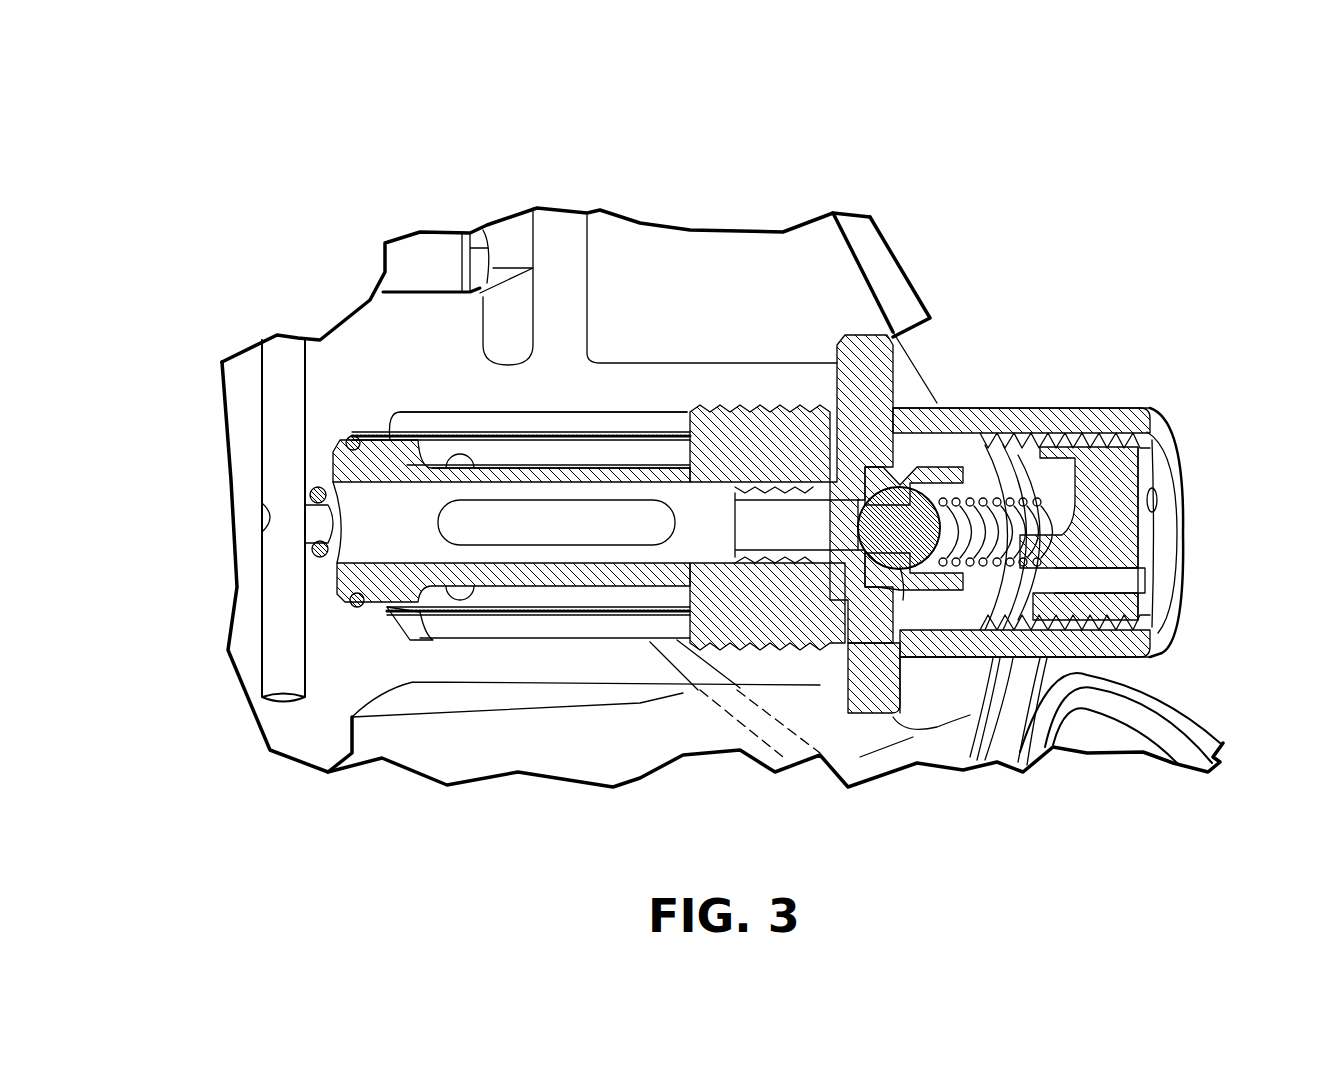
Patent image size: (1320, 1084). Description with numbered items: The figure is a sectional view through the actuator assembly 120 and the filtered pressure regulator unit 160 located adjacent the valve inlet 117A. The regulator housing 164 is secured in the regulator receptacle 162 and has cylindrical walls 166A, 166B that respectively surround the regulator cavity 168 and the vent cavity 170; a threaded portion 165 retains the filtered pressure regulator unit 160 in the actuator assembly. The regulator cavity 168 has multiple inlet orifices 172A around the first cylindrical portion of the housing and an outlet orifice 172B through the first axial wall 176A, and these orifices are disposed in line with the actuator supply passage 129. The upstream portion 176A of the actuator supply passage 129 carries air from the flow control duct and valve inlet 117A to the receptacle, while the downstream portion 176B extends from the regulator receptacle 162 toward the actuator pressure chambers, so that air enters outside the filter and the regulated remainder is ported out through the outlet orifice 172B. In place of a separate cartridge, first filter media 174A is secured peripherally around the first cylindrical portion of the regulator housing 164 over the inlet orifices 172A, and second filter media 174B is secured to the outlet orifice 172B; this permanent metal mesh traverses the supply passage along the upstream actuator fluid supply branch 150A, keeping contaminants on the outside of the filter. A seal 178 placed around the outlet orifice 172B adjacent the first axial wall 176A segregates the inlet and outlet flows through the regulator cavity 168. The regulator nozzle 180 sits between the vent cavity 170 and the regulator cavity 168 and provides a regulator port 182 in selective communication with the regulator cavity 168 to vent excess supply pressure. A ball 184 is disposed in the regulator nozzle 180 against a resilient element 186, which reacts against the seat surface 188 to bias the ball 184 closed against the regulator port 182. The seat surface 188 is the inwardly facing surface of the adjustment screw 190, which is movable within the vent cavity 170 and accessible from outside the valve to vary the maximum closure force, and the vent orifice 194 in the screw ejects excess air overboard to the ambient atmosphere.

The actuator assembly 120 is at (715, 205).
The filtered pressure regulator unit 160 is at (1125, 375).
The actuator supply passage 129 is at (305, 410).
The first filter media 174A is at (445, 430).
The outlet orifice 172B is at (515, 455).
The regulator receptacle 162 is at (605, 412).
The threaded portion 165 is at (745, 440).
The regulator nozzle 180 is at (835, 525).
The regulator port 182 is at (905, 462).
The regulator housing 164 is at (1020, 405).
The seat surface 188 is at (1068, 533).
The downstream portion 176B is at (1182, 437).
The vent orifice 194 is at (1157, 500).
The adjustment screw 190 is at (1150, 540).
The cylindrical wall 166B is at (1077, 643).
The valve inlet 117A is at (1090, 720).
The first axial wall 176A is at (332, 468).
The second filter media 174B is at (328, 522).
The seal 178 is at (330, 548).
The upstream actuator fluid supply branch 150A is at (280, 632).
The cylindrical wall 166A is at (432, 600).
The regulator cavity 168 is at (511, 521).
The inlet orifice 172A is at (556, 522).
The ball 184 is at (837, 545).
The resilient element 186 is at (985, 590).
The vent cavity 170 is at (915, 615).